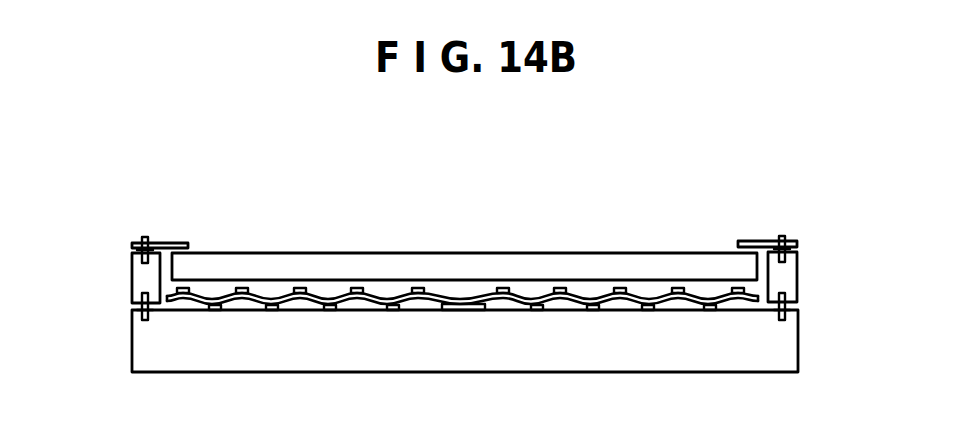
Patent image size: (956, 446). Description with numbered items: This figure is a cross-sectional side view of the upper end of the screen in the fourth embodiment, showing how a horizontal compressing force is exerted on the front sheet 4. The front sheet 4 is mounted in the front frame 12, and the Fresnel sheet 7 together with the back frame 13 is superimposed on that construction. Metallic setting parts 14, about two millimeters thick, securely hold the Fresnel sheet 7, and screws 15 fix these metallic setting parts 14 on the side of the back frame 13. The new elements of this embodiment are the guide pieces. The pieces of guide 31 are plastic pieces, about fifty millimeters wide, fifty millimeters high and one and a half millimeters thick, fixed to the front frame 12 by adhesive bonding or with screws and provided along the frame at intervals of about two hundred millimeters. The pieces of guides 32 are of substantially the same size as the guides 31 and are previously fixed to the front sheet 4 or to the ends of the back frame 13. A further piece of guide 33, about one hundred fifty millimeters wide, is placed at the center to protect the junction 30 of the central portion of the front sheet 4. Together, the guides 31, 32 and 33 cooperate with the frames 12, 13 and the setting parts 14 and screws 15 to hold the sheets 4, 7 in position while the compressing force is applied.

The front sheet 4 is at (584, 292).
The Fresnel sheet 7 is at (658, 253).
The front frame 12 is at (137, 343).
The back frame 13 is at (134, 277).
The metallic setting parts 14 is at (178, 243).
The screws 15 is at (147, 240).
The junction 30 is at (472, 292).
The pieces of guide 31 is at (274, 312).
The pieces of guides 32 is at (300, 290).
The piece of guide 33 is at (460, 312).